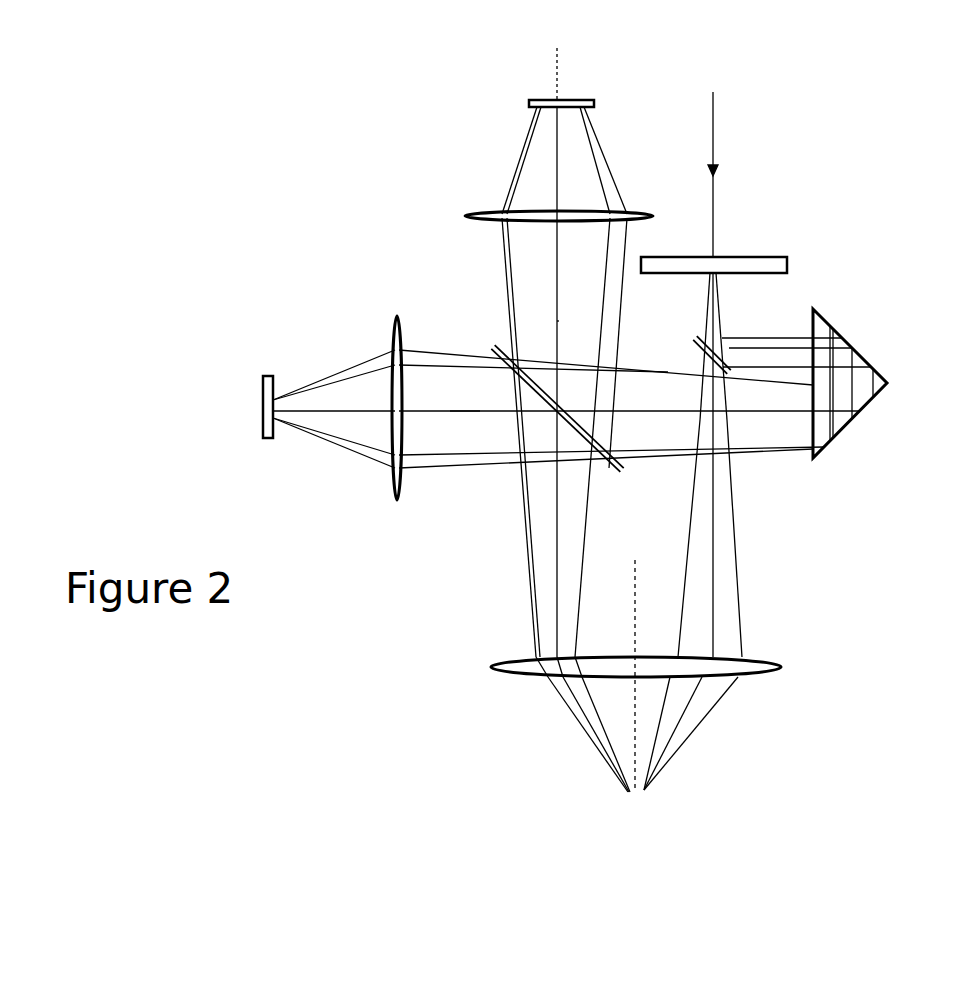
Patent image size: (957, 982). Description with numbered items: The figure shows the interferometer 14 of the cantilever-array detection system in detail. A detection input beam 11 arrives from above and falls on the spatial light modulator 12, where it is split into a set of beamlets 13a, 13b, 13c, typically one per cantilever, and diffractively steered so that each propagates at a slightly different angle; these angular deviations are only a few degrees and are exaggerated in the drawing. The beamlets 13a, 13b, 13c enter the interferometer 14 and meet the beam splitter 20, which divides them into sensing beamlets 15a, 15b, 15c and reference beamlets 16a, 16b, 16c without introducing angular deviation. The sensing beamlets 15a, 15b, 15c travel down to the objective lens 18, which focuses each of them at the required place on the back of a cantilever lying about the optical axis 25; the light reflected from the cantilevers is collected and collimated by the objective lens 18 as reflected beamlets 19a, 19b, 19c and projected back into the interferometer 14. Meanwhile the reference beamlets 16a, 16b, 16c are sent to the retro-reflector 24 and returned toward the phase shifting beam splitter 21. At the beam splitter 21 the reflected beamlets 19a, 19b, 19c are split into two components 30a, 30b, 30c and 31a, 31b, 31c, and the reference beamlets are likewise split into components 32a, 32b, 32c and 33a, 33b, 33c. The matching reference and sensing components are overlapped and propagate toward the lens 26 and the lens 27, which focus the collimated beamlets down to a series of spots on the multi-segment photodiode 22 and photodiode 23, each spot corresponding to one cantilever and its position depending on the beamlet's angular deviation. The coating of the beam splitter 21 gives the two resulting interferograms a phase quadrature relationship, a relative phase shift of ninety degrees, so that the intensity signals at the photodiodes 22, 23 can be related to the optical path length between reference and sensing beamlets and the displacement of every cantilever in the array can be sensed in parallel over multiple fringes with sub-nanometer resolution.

The detection input beam 11 is at (708, 122).
The spatial light modulator 12 is at (758, 256).
The beamlet 13a is at (716, 312).
The beamlet 13b is at (716, 332).
The beamlet 13c is at (707, 326).
The interferometer 14 is at (394, 254).
The sensing beamlet 15a is at (733, 522).
The sensing beamlet 15b is at (715, 581).
The sensing beamlet 15c is at (685, 563).
The reference beamlet 16a is at (843, 372).
The reference beamlet 16b is at (822, 347).
The reference beamlet 16c is at (792, 335).
The objective lens 18 is at (782, 666).
The reflected beamlet 19a is at (535, 614).
The reflected beamlet 19b is at (556, 564).
The reflected beamlet 19c is at (560, 780).
The beam splitter 20 is at (693, 341).
The phase shifting beam splitter 21 is at (493, 345).
The photodiode 22 is at (561, 65).
The photodiode 23 is at (262, 408).
The retro-reflector 24 is at (840, 428).
The optical axis 25 is at (637, 703).
The lens 26 is at (482, 213).
The lens 27 is at (392, 498).
The sensing beamlet component 30a is at (510, 274).
The sensing beamlet component 30b is at (556, 288).
The sensing beamlet component 30c is at (606, 271).
The sensing beamlet component 31a is at (424, 369).
The sensing beamlet component 31b is at (450, 410).
The sensing beamlet component 31c is at (425, 470).
The reference beamlet component 32a is at (415, 349).
The reference beamlet component 32b is at (478, 414).
The reference beamlet component 32c is at (501, 463).
The reference beamlet component 33a is at (501, 263).
The reference beamlet component 33b is at (559, 320).
The reference beamlet component 33c is at (616, 397).